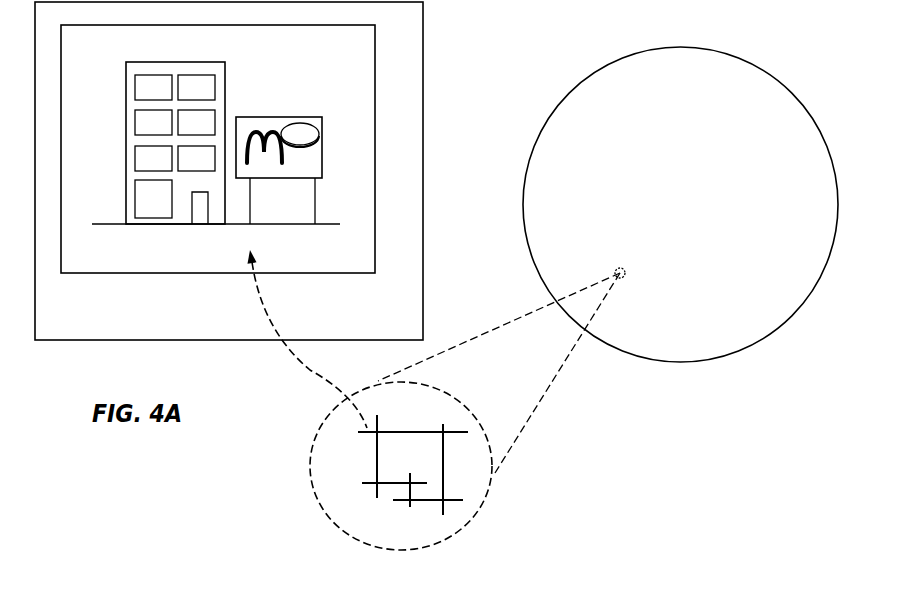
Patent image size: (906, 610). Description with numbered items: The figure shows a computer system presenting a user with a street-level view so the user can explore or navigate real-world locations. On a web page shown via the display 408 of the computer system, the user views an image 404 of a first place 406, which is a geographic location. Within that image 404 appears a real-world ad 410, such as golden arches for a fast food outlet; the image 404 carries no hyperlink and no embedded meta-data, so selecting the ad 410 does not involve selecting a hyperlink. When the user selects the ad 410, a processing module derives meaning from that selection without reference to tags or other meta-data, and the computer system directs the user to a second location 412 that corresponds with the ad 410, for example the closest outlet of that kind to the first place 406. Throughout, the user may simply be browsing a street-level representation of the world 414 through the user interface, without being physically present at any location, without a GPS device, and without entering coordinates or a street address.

The image 404 is at (120, 259).
The first place 406 is at (368, 432).
The display 408 is at (87, 322).
The ad 410 is at (303, 97).
The second location 412 is at (423, 497).
The street-level representation of the world 414 is at (712, 83).